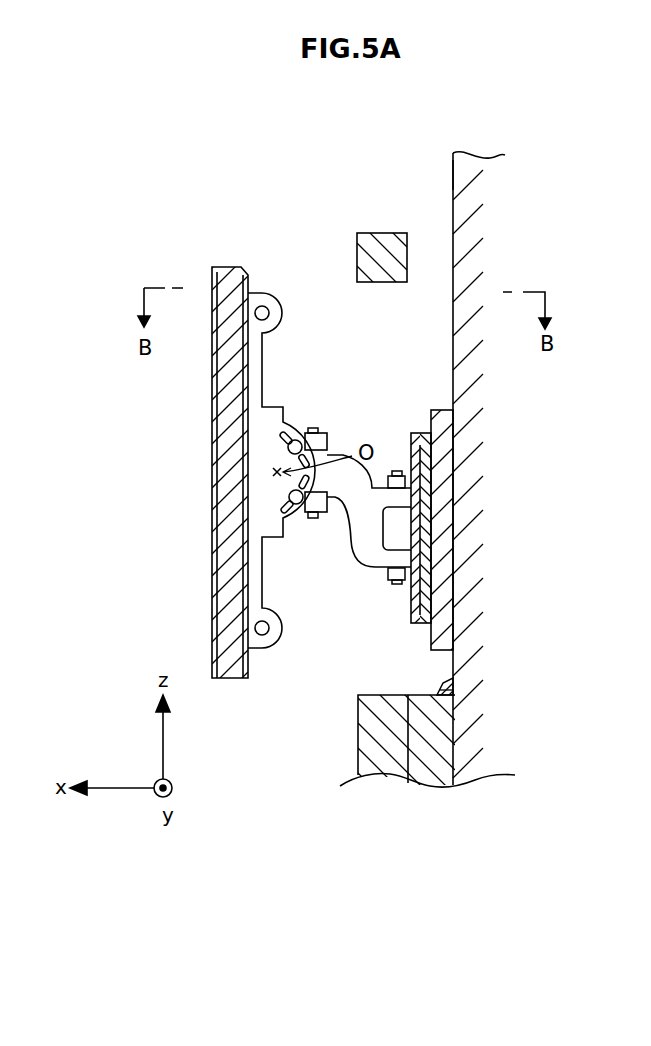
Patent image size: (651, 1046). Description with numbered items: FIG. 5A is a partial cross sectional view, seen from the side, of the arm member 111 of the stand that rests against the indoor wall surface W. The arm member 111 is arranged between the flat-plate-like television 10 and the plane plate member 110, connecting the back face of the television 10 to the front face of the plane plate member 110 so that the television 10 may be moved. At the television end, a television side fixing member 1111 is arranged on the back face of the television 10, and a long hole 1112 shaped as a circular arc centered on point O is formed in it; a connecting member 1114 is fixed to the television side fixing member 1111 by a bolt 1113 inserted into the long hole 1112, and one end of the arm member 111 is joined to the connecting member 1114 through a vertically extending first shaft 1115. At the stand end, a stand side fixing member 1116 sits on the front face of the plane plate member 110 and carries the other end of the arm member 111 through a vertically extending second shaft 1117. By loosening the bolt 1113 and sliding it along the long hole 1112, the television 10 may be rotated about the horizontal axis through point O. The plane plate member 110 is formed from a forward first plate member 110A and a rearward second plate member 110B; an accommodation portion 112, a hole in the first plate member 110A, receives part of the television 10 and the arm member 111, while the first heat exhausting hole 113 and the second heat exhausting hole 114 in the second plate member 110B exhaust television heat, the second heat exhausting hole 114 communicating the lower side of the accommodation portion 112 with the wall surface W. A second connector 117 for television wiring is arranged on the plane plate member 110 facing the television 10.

The image display device 10 is at (228, 267).
The plane plate member 110 is at (577, 688).
The first plate member 110A is at (371, 233).
The second plate member 110B is at (463, 539).
The arm member 111 is at (355, 550).
The accommodation portion 112 is at (359, 328).
The first heat exhausting hole 113 is at (432, 317).
The second heat exhausting hole 114 is at (446, 669).
The second connector 117 is at (437, 683).
The television side fixing member 1111 is at (272, 408).
The long hole 1112 is at (283, 437).
The bolt 1113 is at (289, 496).
The connecting member 1114 is at (329, 446).
The first shaft 1115 is at (313, 428).
The stand side fixing member 1116 is at (416, 433).
The second shaft 1117 is at (398, 471).
The wall surface W is at (453, 190).